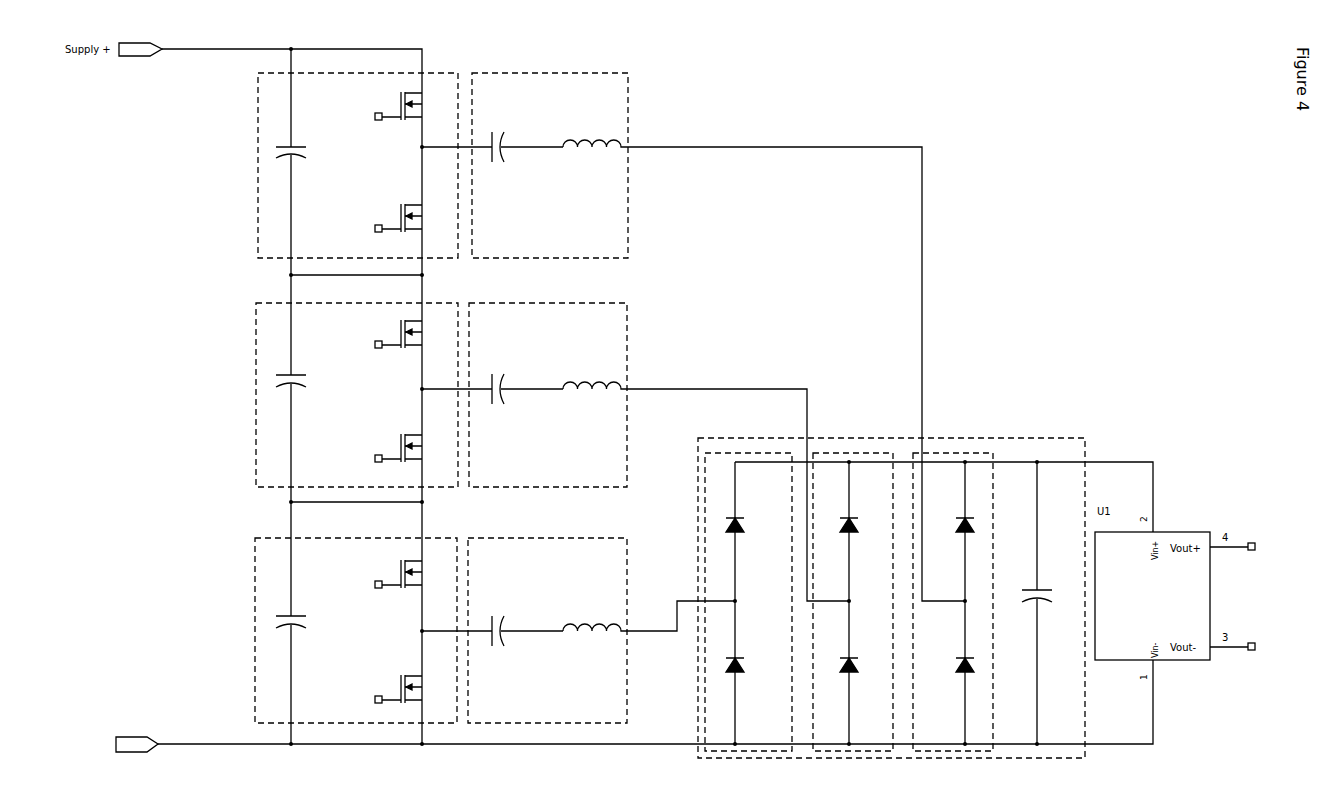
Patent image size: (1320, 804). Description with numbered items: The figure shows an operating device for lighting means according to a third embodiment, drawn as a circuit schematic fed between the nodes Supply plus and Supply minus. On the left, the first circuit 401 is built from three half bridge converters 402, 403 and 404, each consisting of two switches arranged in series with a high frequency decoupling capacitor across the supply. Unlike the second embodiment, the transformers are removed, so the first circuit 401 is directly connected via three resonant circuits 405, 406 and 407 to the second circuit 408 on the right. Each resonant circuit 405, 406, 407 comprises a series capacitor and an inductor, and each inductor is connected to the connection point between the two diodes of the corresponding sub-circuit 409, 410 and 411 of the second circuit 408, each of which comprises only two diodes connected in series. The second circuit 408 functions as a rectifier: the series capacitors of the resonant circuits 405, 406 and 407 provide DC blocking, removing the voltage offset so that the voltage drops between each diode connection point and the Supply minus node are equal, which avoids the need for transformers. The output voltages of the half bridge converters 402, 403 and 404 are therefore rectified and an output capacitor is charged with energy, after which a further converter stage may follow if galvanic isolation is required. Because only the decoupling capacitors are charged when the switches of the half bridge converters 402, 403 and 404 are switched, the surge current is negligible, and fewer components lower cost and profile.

The first circuit 401 is at (607, 724).
The half bridge converter 402 is at (325, 162).
The half bridge converter 403 is at (325, 388).
The half bridge converter 404 is at (325, 623).
The resonant circuit 405 is at (693, 337).
The resonant circuit 406 is at (635, 452).
The resonant circuit 407 is at (578, 630).
The second circuit 408 is at (925, 602).
The sub-circuit 409 is at (748, 581).
The sub-circuit 410 is at (853, 581).
The sub-circuit 411 is at (957, 581).